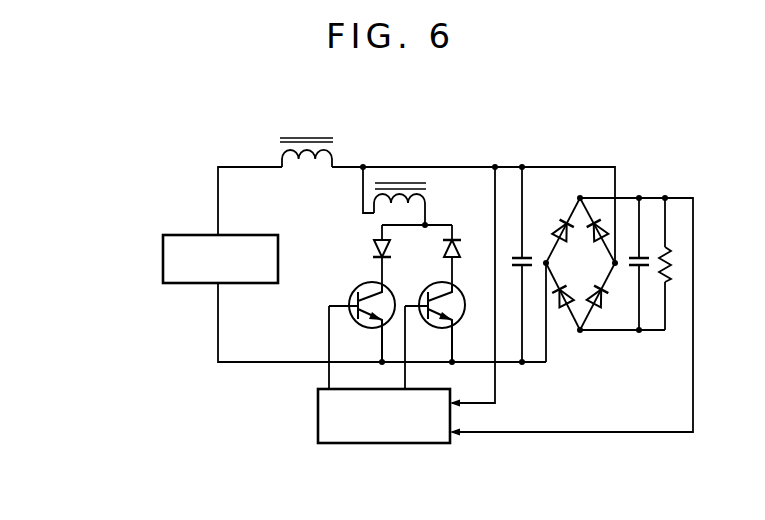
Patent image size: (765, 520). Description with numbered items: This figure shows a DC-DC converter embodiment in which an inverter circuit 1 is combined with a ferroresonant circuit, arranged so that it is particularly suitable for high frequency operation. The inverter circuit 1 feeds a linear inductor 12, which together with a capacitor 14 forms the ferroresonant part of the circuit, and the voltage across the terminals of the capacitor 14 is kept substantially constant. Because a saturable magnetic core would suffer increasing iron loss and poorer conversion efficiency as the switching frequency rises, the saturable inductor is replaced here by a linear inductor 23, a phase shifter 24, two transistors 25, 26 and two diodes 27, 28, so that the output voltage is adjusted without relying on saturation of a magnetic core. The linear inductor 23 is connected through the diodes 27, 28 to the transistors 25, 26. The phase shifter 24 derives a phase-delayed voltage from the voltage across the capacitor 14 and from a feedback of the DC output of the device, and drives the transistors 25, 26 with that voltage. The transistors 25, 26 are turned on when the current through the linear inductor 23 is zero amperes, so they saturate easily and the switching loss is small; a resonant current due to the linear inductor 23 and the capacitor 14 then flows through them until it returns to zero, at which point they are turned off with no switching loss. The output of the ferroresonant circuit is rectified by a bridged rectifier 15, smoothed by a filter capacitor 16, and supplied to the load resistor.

The DC power source 1 is at (180, 288).
The linear inductor 12 is at (304, 135).
The linear inductor 23 is at (404, 178).
The diode 27 is at (373, 247).
The diode 28 is at (453, 224).
The transistor 25 is at (350, 287).
The transistor 26 is at (434, 286).
The phase shifter 24 is at (318, 413).
The capacitor 14 is at (534, 252).
The bridged rectifier 15 is at (563, 318).
The filter capacitor 16 is at (646, 250).